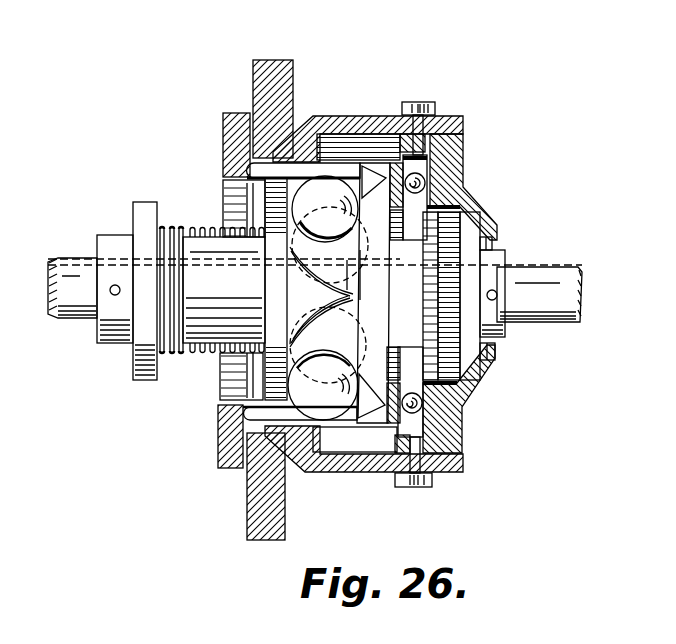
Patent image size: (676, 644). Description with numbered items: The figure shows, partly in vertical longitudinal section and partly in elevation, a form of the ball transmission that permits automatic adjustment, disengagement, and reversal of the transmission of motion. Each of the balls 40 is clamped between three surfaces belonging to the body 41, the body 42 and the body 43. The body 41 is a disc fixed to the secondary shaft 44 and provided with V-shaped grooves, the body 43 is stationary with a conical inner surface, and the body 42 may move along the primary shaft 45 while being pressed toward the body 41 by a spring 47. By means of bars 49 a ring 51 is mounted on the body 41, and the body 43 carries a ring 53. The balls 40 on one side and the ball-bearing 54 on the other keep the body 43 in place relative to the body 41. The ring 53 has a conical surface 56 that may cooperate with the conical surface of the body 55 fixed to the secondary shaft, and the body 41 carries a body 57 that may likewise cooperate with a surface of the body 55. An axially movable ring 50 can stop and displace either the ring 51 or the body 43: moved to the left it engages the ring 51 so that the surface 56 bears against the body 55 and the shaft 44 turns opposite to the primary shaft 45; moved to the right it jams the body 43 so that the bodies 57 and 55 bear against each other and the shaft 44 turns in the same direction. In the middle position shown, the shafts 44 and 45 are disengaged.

The balls 40 is at (382, 143).
The body 41 is at (437, 110).
The body 42 is at (277, 293).
The body 43 is at (321, 122).
The secondary shaft 44 is at (542, 278).
The primary shaft 45 is at (75, 266).
The spring 47 is at (197, 354).
The bars 49 is at (331, 200).
The ring 50 is at (270, 83).
The ring 51 is at (230, 158).
The ring 53 is at (455, 170).
The ball-bearing 54 is at (467, 115).
The body 55 is at (468, 298).
The conical surface 56 is at (493, 222).
The body 57 is at (427, 282).